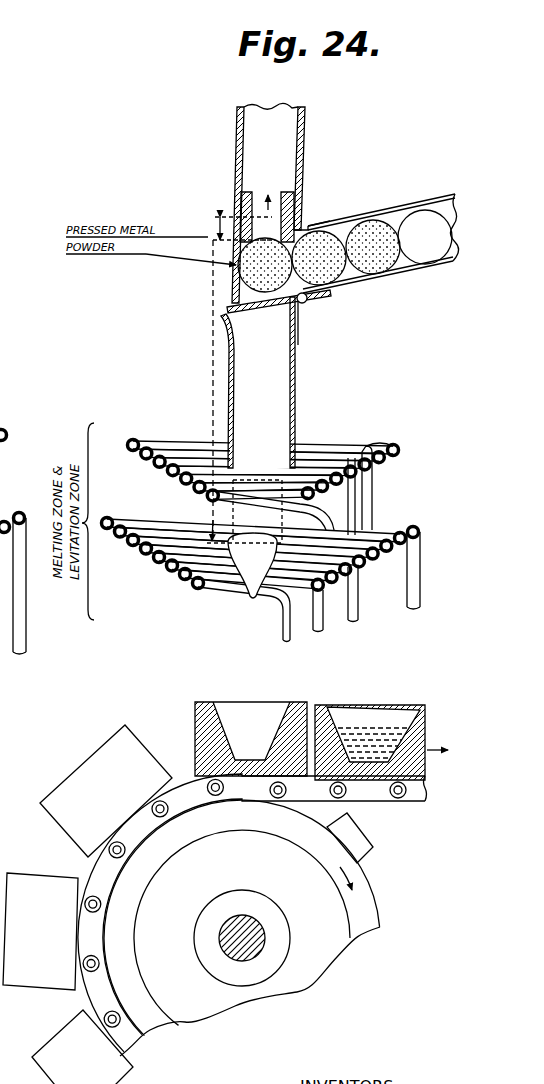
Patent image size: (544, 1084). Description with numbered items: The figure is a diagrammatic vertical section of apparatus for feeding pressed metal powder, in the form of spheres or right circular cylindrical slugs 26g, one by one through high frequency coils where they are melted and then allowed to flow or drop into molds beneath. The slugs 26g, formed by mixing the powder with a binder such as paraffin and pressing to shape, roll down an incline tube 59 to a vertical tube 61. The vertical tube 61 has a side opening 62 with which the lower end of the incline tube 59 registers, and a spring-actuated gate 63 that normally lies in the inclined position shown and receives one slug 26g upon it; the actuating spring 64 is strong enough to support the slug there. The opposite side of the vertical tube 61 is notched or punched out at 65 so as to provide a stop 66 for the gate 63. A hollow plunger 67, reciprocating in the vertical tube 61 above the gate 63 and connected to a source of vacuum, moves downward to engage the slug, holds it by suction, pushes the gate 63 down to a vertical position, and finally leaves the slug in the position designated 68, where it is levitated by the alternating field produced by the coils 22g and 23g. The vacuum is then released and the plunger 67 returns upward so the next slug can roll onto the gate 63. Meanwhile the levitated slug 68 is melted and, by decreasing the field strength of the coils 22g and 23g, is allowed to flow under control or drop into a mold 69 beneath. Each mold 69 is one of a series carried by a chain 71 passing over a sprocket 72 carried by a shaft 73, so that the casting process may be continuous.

The incline tube 59 is at (370, 218).
The vertical tube 61 is at (304, 168).
The side opening 62 is at (308, 227).
The spring-actuated gate 63 is at (257, 308).
The actuating spring 64 is at (313, 298).
The notch 65 is at (227, 313).
The stop 66 is at (232, 298).
The hollow plunger 67 is at (235, 197).
The levitated slug position 68 is at (245, 565).
The mold 69 is at (133, 760).
The chain 71 is at (378, 800).
The sprocket 72 is at (360, 900).
The shaft 73 is at (260, 938).
The pressed metal powder slugs 26g is at (420, 250).
The high frequency coil 23g is at (330, 452).
The high frequency coil 22g is at (380, 530).